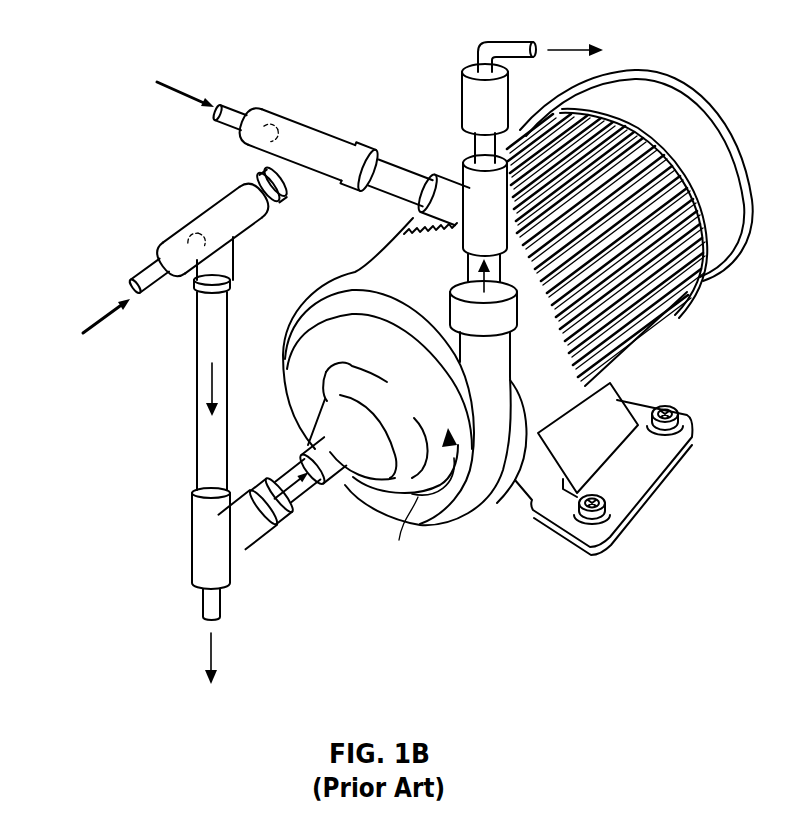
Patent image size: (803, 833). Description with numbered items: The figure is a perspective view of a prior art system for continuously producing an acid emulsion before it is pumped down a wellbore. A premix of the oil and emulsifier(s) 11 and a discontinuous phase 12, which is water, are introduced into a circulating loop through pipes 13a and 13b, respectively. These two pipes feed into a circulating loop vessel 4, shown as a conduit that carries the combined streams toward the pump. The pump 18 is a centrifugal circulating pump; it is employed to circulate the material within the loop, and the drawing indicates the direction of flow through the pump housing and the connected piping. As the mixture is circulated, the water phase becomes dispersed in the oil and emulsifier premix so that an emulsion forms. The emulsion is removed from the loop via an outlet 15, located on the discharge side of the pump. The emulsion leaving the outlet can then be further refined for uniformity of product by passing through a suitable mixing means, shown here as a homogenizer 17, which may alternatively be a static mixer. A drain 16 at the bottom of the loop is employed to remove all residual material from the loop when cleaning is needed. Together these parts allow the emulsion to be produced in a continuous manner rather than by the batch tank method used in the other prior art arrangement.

The circulating loop vessel 4 is at (197, 377).
The premix of the oil and emulsifier(s) 11 is at (180, 96).
The discontinuous phase 12 is at (100, 311).
The pipe 13a is at (270, 128).
The pipe 13b is at (193, 243).
The outlet 15 is at (473, 143).
The drain 16 is at (210, 650).
The homogenizer 17 is at (462, 97).
The pump 18 is at (417, 407).